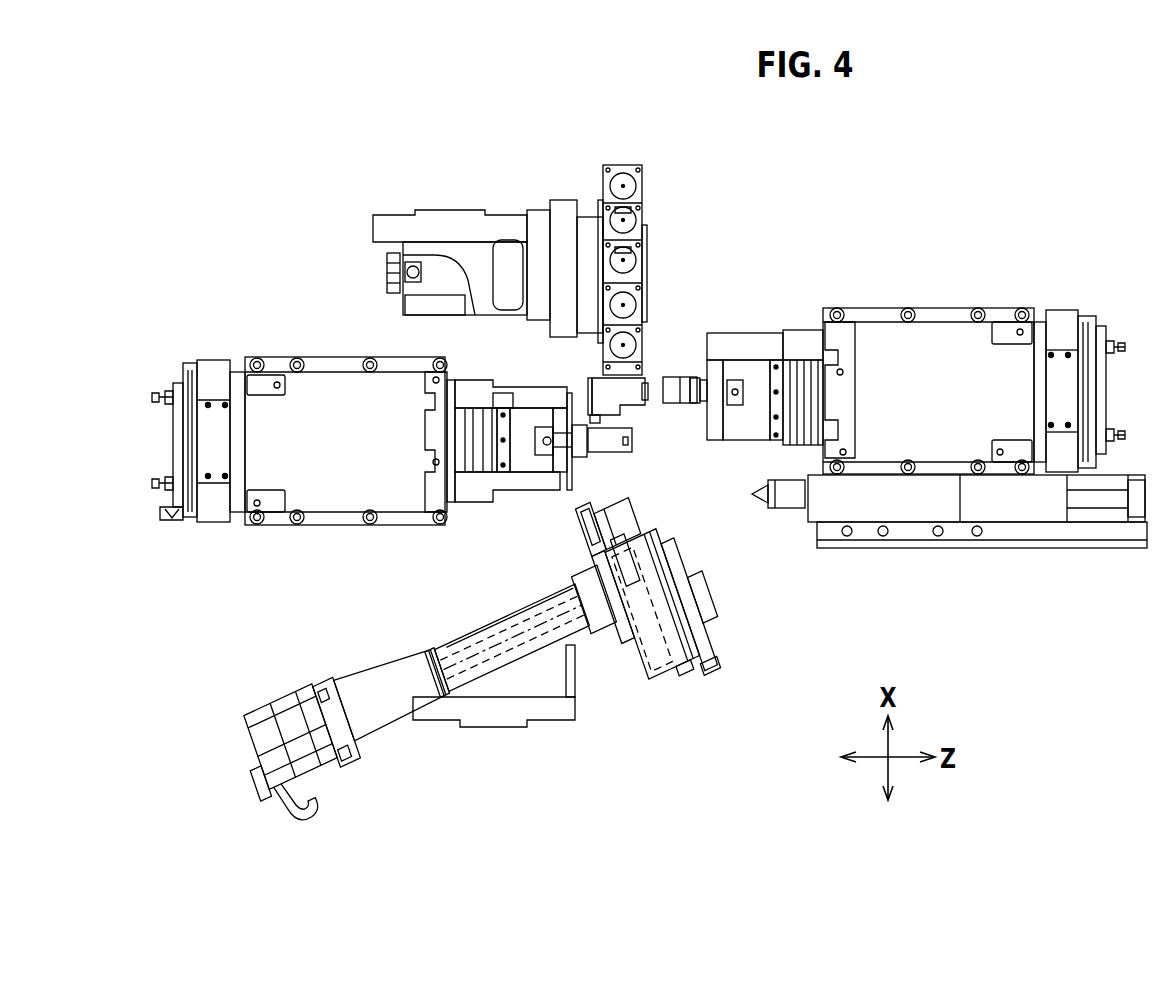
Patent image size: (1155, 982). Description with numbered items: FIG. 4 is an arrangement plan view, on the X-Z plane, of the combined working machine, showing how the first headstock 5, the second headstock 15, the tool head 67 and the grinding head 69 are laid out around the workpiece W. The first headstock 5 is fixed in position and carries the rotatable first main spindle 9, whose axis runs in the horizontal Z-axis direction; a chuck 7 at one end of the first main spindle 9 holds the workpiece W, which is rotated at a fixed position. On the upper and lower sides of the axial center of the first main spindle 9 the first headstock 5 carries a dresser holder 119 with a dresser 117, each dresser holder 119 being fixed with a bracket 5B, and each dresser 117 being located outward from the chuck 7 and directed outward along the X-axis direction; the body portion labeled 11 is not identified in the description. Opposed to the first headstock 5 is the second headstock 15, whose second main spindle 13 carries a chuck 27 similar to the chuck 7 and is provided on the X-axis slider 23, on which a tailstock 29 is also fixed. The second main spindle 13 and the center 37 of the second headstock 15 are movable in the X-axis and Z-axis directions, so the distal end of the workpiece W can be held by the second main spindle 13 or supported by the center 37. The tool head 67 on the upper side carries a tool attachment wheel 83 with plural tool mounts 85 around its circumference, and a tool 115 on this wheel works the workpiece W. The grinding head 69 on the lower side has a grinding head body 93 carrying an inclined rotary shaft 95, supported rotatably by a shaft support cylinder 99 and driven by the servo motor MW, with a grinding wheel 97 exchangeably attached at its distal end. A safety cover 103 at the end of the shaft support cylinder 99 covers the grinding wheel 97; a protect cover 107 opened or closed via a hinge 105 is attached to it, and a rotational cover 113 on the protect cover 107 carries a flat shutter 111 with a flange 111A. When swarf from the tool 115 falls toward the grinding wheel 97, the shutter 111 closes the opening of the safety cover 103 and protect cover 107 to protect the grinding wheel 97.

The first headstock 5 is at (487, 413).
The bracket 5B is at (445, 410).
The chuck 7 is at (545, 462).
The first main spindle 9 is at (470, 447).
The headstock body 11 is at (333, 505).
The second main spindle 13 is at (792, 418).
The second headstock 15 is at (993, 300).
The X-axis slider 23 is at (977, 565).
The chuck 27 is at (737, 448).
The tailstock 29 is at (905, 557).
The center 37 is at (773, 505).
The tool head 67 is at (546, 238).
The grinding head 69 is at (517, 659).
The tool attachment wheel 83 is at (645, 183).
The tool mounts 85 is at (648, 243).
The grinding head body 93 is at (570, 670).
The rotary shaft 95 is at (470, 640).
The grinding wheel 97 is at (640, 607).
The shaft support cylinder 99 is at (500, 695).
The safety cover 103 is at (657, 673).
The hinge 105 is at (683, 665).
The protect cover 107 is at (707, 680).
The shutter 111 is at (648, 518).
The flange 111A is at (590, 508).
The rotational cover 113 is at (705, 648).
The tool 115 is at (600, 418).
The dresser 117 is at (566, 385).
The dresser holder 119 is at (525, 395).
The workpiece W is at (632, 452).
The servo motor MW is at (300, 707).